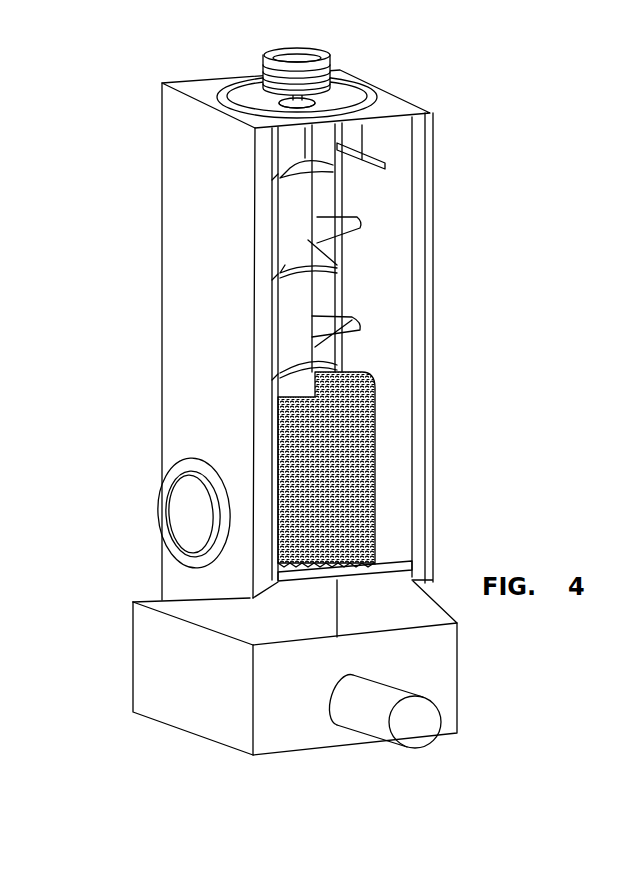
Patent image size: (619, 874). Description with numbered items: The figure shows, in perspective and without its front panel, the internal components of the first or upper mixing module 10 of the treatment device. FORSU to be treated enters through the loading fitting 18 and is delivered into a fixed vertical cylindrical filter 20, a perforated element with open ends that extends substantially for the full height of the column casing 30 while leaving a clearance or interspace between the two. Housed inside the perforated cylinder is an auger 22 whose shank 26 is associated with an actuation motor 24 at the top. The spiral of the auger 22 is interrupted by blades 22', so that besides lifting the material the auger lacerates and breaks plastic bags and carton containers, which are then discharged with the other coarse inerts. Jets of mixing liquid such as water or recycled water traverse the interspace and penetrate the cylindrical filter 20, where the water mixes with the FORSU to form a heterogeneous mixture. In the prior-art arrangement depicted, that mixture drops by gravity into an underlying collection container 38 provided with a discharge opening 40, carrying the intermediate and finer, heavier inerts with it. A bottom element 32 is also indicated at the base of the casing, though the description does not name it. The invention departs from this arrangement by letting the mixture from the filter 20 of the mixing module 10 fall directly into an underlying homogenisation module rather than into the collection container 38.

The mixing module 10 is at (493, 207).
The loading fitting 18 is at (189, 515).
The cylindrical filter 20 is at (380, 491).
The auger 22 is at (390, 251).
The blades 22' is at (406, 313).
The actuation motor 24 is at (332, 63).
The shank 26 is at (268, 104).
The column casing 30 is at (168, 415).
The bottom plate 32 is at (283, 583).
The collection container 38 is at (163, 707).
The discharge opening 40 is at (427, 737).